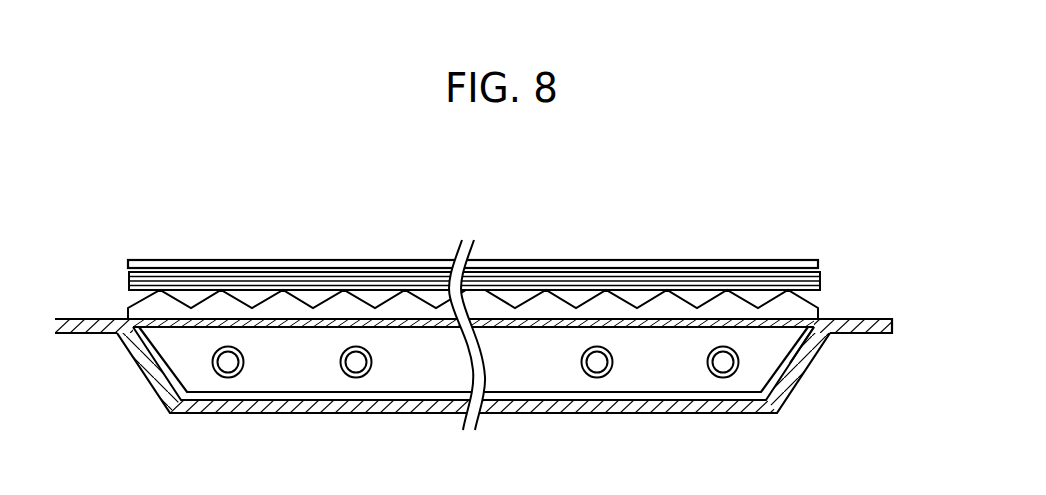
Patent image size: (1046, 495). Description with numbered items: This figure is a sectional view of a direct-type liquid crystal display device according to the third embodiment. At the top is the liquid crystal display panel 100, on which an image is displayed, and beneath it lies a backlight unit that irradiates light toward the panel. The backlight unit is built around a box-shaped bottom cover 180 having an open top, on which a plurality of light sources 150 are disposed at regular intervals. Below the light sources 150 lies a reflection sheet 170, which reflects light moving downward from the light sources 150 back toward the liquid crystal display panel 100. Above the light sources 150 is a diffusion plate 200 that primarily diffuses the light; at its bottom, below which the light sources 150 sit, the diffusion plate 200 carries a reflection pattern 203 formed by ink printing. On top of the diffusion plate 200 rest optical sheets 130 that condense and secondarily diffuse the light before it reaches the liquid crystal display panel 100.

The liquid crystal display panel 100 is at (819, 264).
The optical sheets 130 is at (822, 283).
The diffusion plate 200 is at (822, 311).
The reflection pattern 203 is at (804, 330).
The bottom cover 180 is at (797, 372).
The reflection sheet 170 is at (627, 399).
The light sources 150 is at (723, 378).